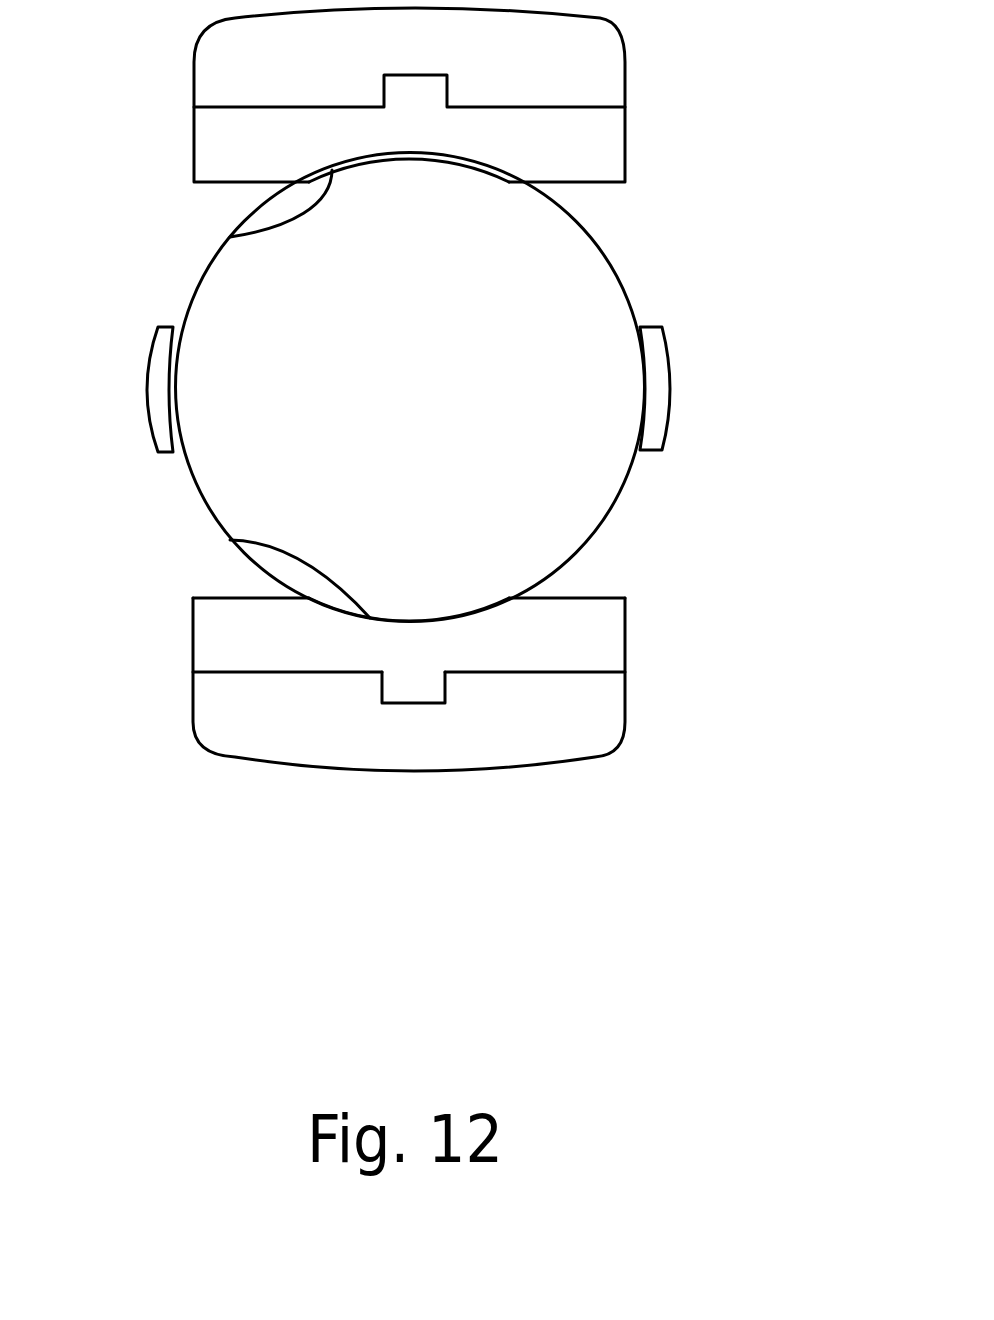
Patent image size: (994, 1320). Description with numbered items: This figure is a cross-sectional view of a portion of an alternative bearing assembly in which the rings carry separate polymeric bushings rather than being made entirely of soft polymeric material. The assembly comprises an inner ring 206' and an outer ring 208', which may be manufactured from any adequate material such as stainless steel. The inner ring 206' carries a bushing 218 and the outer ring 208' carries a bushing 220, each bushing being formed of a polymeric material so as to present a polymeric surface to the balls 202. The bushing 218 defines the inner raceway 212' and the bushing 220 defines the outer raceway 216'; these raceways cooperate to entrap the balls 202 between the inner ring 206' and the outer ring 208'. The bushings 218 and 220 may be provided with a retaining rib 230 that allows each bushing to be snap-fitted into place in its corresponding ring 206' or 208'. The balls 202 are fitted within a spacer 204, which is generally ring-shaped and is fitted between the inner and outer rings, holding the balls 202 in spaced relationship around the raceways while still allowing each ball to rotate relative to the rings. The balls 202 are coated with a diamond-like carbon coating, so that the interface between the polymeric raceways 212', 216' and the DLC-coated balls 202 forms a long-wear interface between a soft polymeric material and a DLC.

The ball 202 is at (572, 295).
The spacer 204 is at (657, 428).
The outer ring 208' is at (533, 95).
The bushing 220 is at (595, 152).
The outer raceway 216' is at (185, 208).
The inner raceway 212' is at (233, 572).
The bushing 218 is at (597, 632).
The retaining rib 230 is at (396, 688).
The inner ring 206' is at (475, 726).